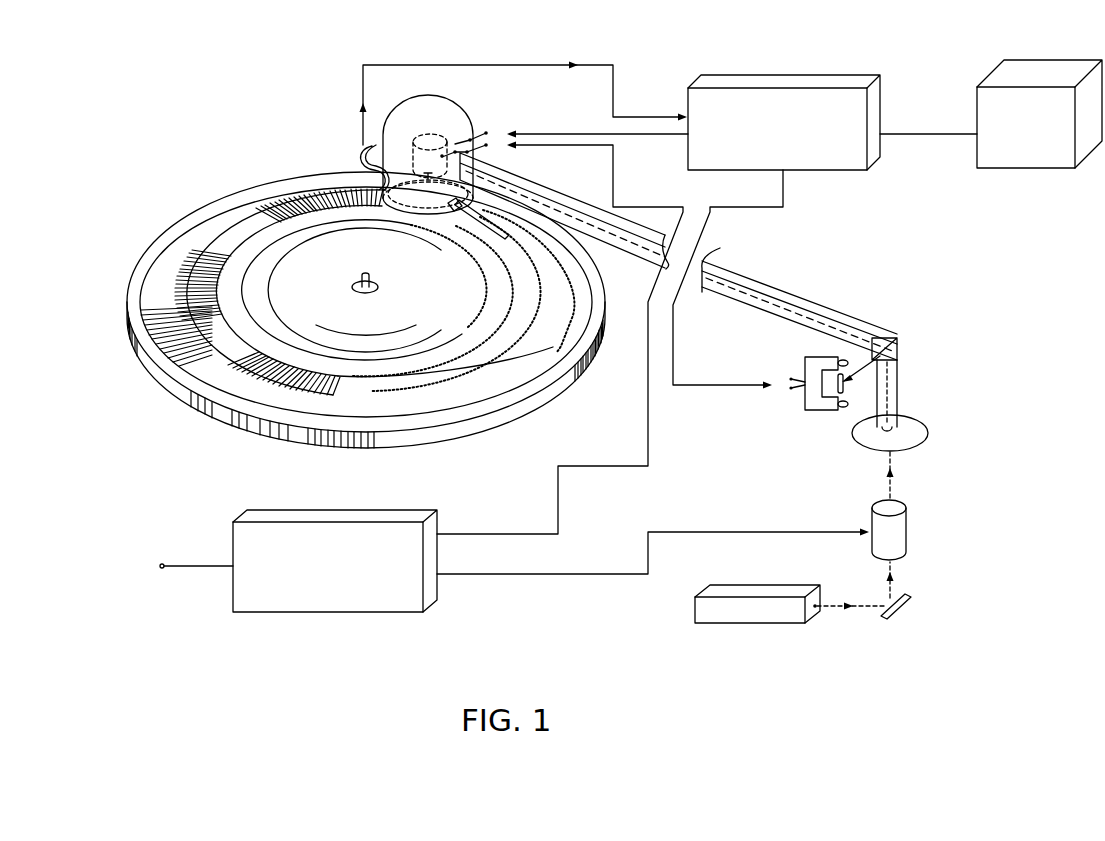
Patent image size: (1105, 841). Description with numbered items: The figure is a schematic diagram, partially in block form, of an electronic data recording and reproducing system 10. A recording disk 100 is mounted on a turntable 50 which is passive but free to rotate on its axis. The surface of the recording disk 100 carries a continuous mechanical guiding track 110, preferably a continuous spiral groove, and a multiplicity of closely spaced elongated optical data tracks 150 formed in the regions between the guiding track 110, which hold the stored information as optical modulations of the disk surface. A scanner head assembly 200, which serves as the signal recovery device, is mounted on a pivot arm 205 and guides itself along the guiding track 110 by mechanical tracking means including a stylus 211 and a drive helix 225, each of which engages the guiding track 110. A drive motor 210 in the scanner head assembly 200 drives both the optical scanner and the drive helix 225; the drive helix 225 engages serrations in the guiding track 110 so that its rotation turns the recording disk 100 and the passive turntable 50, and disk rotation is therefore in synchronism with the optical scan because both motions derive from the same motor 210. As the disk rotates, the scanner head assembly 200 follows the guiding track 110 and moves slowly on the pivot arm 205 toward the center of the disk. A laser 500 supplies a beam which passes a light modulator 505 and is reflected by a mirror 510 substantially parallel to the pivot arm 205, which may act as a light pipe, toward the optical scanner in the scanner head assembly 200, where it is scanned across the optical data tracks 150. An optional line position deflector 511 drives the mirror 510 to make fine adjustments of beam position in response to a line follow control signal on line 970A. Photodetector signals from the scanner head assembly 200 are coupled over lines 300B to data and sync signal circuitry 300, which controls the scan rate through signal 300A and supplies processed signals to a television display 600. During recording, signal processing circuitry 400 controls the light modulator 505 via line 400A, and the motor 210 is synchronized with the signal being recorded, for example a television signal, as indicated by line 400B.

The electronic data recording and reproducing system 10 is at (213, 692).
The turntable 50 is at (473, 430).
The recording disk 100 is at (162, 371).
The mechanical guiding track 110 is at (218, 248).
The optical data tracks 150 is at (306, 193).
The scanner head assembly 200 is at (440, 165).
The pivot arm 205 is at (808, 304).
The drive motor 210 is at (428, 134).
The stylus 211 is at (412, 206).
The drive helix 225 is at (480, 231).
The data and sync signal circuitry 300 is at (768, 80).
The scan rate control signal 300A is at (640, 136).
The detector signal lines 300B is at (650, 101).
The signal processing circuitry 400 is at (340, 605).
The light modulator control line 400A is at (508, 574).
The motor synchronization line 400B is at (480, 534).
The laser 500 is at (750, 623).
The light modulator 505 is at (906, 540).
The mirror 510 is at (898, 347).
The line position deflector 511 is at (815, 411).
The television display 600 is at (1030, 72).
The line follow control signal line 970A is at (730, 386).